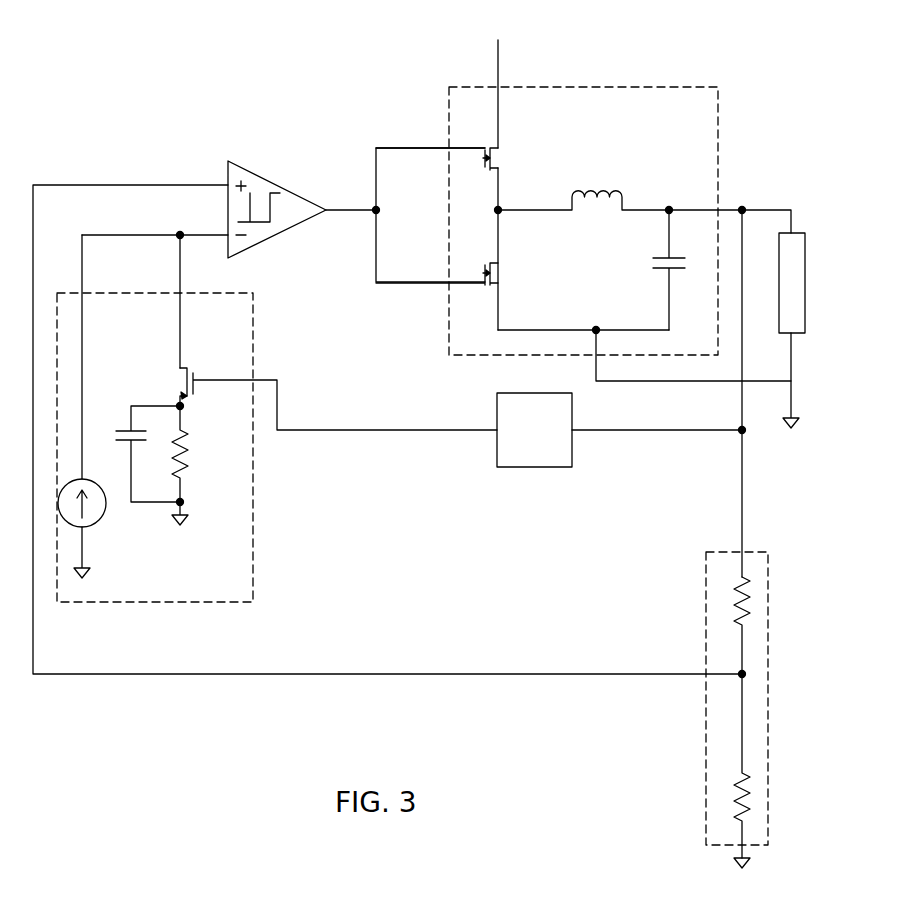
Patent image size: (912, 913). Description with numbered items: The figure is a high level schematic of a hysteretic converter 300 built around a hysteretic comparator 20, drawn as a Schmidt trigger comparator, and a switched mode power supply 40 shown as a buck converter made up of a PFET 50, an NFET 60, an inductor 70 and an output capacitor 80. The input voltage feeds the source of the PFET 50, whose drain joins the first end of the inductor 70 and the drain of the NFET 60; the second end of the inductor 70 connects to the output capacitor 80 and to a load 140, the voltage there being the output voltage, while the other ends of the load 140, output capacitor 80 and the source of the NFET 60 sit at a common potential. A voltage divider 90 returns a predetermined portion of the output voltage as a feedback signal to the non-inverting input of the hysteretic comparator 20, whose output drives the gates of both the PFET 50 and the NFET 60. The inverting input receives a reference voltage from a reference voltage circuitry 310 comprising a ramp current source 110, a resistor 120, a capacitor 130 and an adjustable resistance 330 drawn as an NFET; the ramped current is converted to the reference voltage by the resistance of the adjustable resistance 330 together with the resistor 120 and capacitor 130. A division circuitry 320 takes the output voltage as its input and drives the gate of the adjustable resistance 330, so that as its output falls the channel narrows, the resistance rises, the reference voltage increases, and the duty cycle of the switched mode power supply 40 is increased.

The hysteretic converter 300 is at (126, 46).
The hysteretic comparator 20 is at (275, 236).
The switched mode power supply 40 is at (718, 137).
The PFET 50 is at (505, 150).
The NFET 60 is at (505, 283).
The inductor 70 is at (623, 195).
The output capacitor 80 is at (665, 275).
The voltage divider 90 is at (768, 582).
The ramp current source 110 is at (106, 508).
The resistor 120 is at (190, 455).
The capacitor 130 is at (150, 433).
The load 140 is at (805, 290).
The reference voltage circuitry 310 is at (253, 536).
The division circuitry 320 is at (547, 467).
The adjustable resistance 330 is at (183, 366).